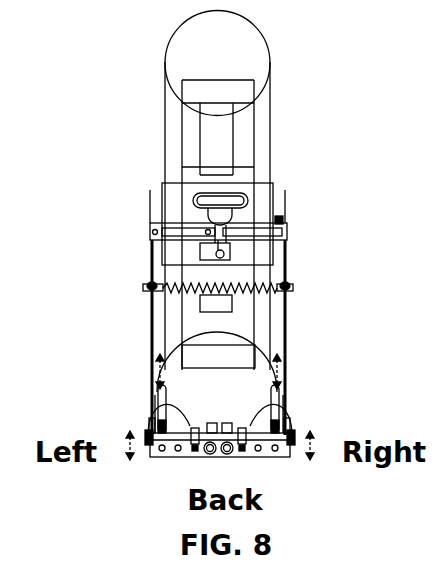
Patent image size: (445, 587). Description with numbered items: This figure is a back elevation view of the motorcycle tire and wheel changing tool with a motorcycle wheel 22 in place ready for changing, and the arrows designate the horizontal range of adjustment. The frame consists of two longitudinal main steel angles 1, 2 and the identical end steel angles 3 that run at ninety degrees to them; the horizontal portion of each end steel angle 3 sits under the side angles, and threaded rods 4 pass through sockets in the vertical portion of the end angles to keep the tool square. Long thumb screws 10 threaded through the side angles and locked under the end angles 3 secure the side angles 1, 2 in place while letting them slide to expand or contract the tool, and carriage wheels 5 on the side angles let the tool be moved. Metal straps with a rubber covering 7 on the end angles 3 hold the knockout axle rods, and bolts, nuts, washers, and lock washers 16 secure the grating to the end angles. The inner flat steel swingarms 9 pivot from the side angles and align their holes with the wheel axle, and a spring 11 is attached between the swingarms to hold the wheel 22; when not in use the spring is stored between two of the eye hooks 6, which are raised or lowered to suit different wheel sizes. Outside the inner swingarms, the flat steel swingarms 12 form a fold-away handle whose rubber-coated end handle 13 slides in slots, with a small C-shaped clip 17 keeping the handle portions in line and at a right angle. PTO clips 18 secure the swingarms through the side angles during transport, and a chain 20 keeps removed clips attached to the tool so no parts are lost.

The main steel angle 1 is at (285, 400).
The main steel angle 2 is at (155, 405).
The end steel angle 3 is at (285, 450).
The threaded rod 4 is at (210, 453).
The carriage wheel 5 is at (155, 456).
The eye hook 6 is at (182, 358).
The metal strap with rubber covering 7 is at (195, 449).
The inner flat steel swingarm 9 is at (310, 408).
The long thumb screw 10 is at (167, 400).
The spring 11 is at (243, 292).
The flat steel swingarm 12 is at (150, 268).
The end handle 13 is at (193, 198).
The bolts, nuts, washers, and lock washers 16 is at (212, 422).
The C-shaped clip 17 is at (284, 220).
The PTO clip 18 is at (150, 405).
The chain 20 is at (145, 436).
The wheel 22 is at (180, 53).